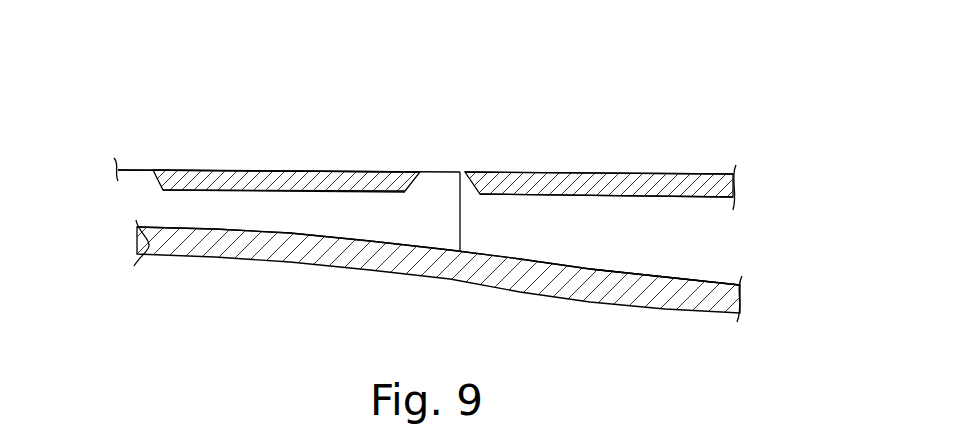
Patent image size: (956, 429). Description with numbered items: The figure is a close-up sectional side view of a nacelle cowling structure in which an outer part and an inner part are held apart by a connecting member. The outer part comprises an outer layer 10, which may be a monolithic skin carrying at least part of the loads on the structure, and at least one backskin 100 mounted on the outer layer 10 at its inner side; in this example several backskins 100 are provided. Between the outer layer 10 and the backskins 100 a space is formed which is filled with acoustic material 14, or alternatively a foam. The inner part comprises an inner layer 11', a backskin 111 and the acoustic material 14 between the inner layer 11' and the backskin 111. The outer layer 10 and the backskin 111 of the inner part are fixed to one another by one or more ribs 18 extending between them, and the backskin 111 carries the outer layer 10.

The outer layer 10 is at (263, 171).
The acoustic material 14 is at (588, 182).
The backskin 100 is at (186, 192).
The rib 18 is at (461, 215).
The inner layer 11' is at (438, 285).
The backskin 111 is at (667, 280).